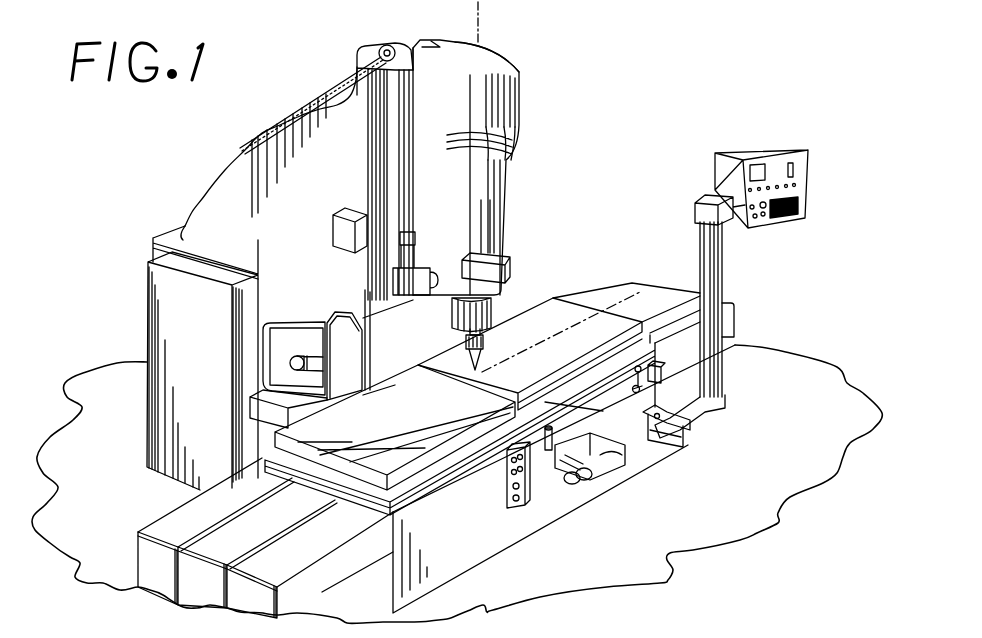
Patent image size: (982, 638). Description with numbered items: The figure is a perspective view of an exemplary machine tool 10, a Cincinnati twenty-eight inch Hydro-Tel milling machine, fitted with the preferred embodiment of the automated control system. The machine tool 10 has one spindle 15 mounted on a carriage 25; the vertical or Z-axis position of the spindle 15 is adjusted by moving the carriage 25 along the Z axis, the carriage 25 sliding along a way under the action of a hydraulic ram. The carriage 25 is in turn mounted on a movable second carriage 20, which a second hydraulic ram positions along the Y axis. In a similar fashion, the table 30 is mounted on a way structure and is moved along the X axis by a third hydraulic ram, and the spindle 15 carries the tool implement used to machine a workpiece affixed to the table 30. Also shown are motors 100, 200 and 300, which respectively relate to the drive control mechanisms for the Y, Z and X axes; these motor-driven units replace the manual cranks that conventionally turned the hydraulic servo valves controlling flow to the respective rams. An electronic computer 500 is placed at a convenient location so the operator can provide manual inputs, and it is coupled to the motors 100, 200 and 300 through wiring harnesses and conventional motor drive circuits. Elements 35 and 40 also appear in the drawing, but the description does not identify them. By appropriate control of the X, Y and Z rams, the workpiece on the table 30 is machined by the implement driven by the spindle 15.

The machine tool 10 is at (513, 65).
The spindle 15 is at (491, 338).
The second carriage 20 is at (201, 204).
The carriage 25 is at (513, 108).
The table 30 is at (597, 317).
The housing 35 is at (148, 332).
The workpiece 40 is at (463, 373).
The motor 100 is at (297, 356).
The motor 200 is at (427, 270).
The motor 300 is at (605, 483).
The electronic computer 500 is at (768, 153).